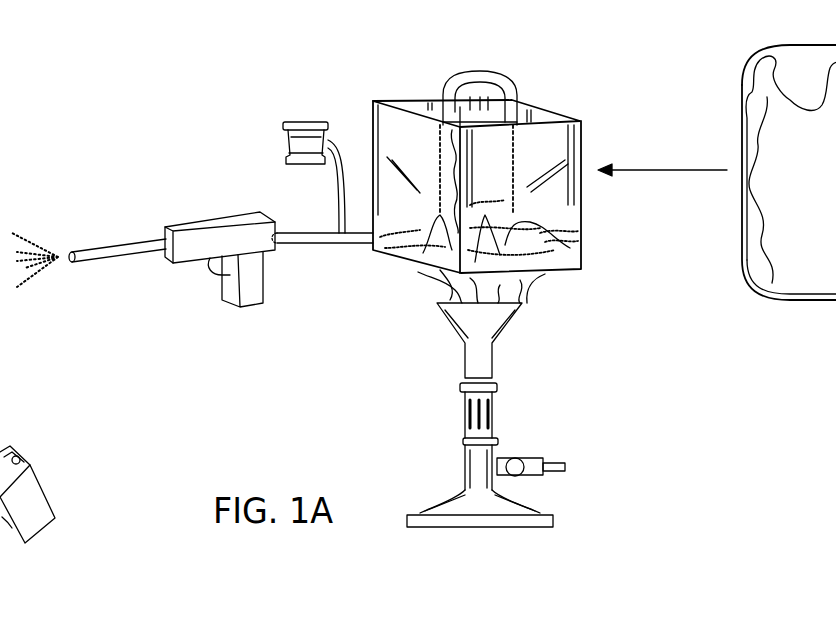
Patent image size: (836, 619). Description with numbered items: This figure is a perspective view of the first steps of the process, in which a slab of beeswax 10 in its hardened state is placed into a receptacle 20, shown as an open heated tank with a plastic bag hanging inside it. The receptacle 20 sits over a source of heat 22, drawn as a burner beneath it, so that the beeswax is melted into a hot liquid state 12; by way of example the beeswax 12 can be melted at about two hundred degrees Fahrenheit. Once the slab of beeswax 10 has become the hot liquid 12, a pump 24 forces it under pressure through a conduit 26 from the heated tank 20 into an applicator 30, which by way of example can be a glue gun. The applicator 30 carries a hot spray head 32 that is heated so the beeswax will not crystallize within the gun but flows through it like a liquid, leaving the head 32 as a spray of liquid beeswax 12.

The slab of beeswax 10 is at (753, 117).
The hot liquid state beeswax 12 is at (23, 238).
The receptacle 20 is at (582, 237).
The source of heat 22 is at (527, 277).
The pump 24 is at (307, 128).
The conduit 26 is at (318, 243).
The applicator 30 is at (188, 222).
The hot spray head 32 is at (88, 250).